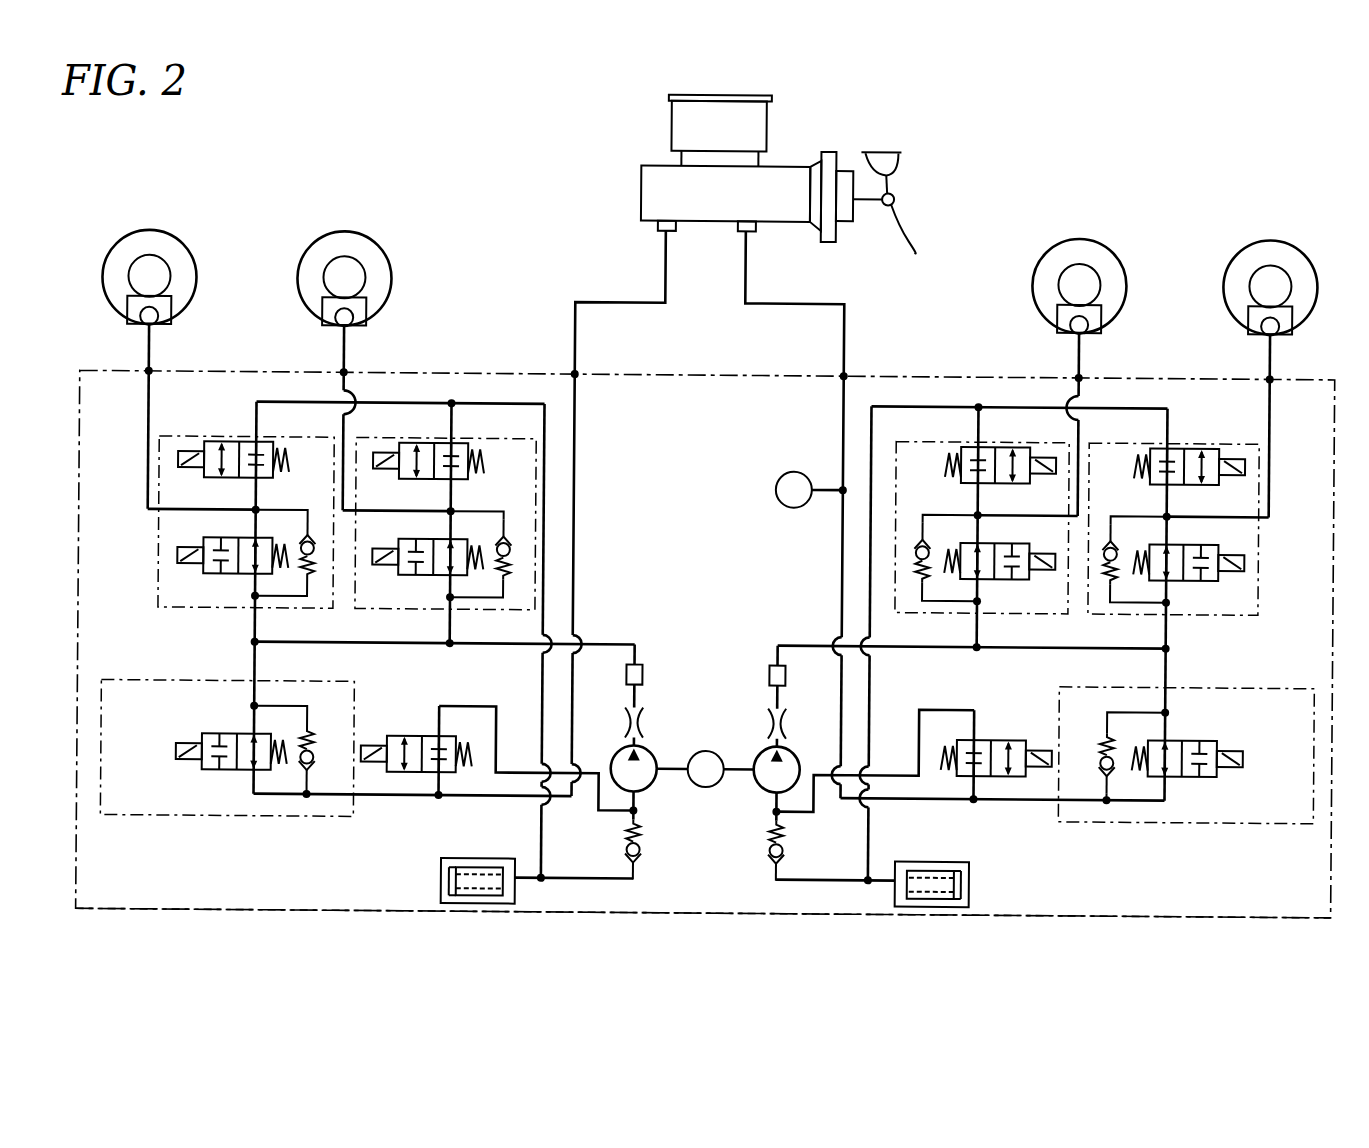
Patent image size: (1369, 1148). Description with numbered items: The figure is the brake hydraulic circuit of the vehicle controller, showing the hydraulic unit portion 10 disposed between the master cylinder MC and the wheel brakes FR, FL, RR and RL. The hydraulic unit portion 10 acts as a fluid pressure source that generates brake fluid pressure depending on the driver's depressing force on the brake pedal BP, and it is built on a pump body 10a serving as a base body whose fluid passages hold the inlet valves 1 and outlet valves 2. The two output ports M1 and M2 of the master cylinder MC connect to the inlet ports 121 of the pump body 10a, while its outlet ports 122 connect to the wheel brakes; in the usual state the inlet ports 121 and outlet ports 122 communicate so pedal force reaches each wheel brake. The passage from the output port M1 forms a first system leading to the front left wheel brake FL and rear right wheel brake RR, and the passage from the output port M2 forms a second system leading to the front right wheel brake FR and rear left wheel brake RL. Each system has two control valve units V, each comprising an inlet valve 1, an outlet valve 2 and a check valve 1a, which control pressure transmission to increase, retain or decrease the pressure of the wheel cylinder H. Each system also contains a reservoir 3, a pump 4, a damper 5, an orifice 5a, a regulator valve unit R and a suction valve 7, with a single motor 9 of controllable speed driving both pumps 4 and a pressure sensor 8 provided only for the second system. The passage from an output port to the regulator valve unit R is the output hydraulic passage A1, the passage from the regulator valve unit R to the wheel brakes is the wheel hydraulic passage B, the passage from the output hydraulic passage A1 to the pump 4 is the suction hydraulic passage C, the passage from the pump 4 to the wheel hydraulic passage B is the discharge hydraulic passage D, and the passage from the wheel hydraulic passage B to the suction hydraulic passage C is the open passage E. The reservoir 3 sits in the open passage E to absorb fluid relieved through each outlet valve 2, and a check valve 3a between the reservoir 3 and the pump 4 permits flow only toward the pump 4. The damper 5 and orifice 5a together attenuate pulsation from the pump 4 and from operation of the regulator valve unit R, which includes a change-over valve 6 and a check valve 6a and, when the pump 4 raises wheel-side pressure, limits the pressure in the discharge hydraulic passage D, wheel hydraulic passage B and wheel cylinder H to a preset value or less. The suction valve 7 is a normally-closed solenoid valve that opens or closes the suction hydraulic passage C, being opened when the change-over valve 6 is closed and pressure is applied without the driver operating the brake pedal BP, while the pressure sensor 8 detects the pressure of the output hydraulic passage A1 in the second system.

The inlet valve 1 is at (212, 578).
The check valve 1a is at (312, 536).
The outlet valve 2 is at (265, 441).
The reservoir 3 is at (418, 892).
The check valve 3a is at (645, 852).
The pump 4 is at (652, 782).
The damper 5 is at (644, 672).
The orifice 5a is at (641, 718).
The change-over valve 6 is at (210, 773).
The check valve 6a is at (320, 755).
The suction valve 7 is at (396, 735).
The pressure sensor 8 is at (775, 486).
The motor 9 is at (704, 750).
The hydraulic unit portion 10 is at (911, 352).
The pump body 10a is at (242, 912).
The inlet port 121 is at (576, 371).
The outlet port 122 is at (149, 371).
The master cylinder MC is at (643, 186).
The output port M1 is at (659, 225).
The output port M2 is at (750, 228).
The brake pedal BP is at (913, 246).
The front left wheel brake FL is at (149, 230).
The rear right wheel brake RR is at (344, 230).
The rear left wheel brake RL is at (1080, 232).
The front right wheel brake FR is at (1268, 232).
The wheel cylinder H is at (153, 318).
The output hydraulic passage A1 is at (575, 446).
The wheel hydraulic passage B is at (149, 416).
The suction hydraulic passage C is at (514, 773).
The discharge hydraulic passage D is at (618, 642).
The open passage E is at (459, 403).
The control valve unit V is at (467, 437).
The regulator valve unit R is at (103, 818).